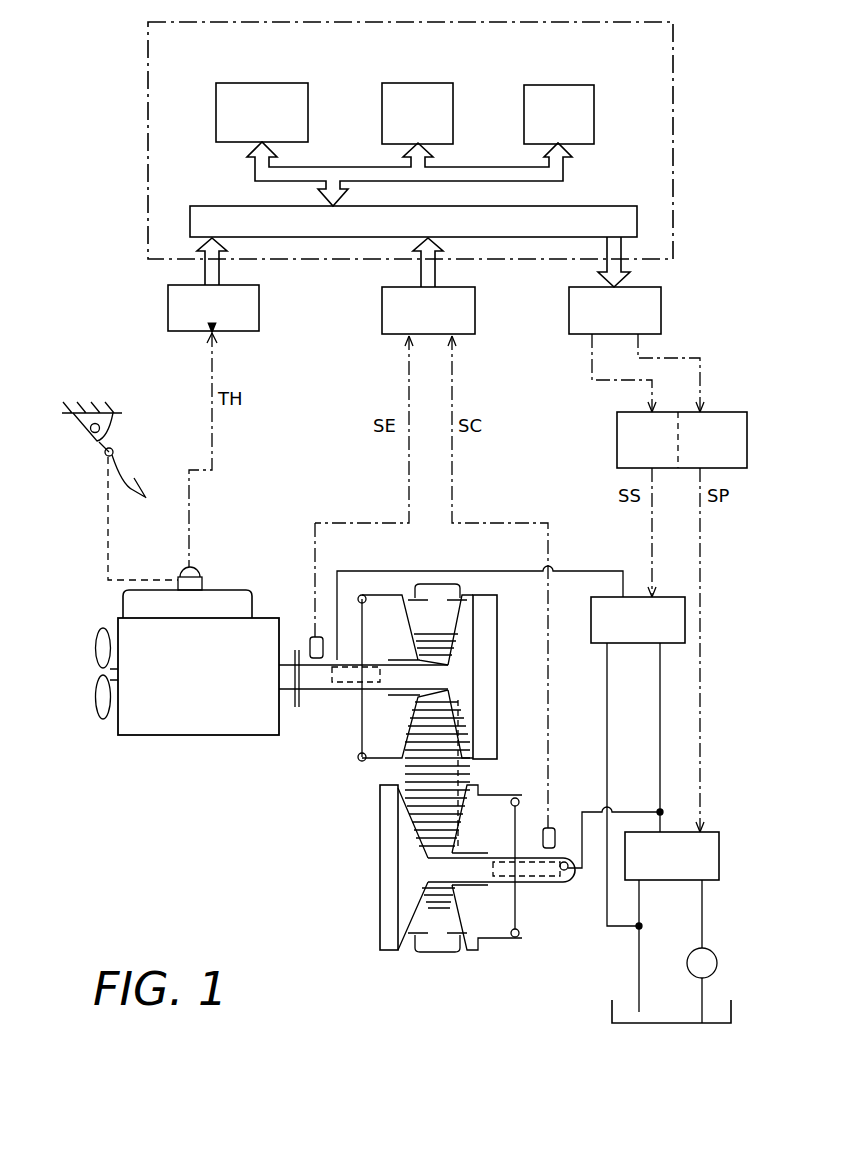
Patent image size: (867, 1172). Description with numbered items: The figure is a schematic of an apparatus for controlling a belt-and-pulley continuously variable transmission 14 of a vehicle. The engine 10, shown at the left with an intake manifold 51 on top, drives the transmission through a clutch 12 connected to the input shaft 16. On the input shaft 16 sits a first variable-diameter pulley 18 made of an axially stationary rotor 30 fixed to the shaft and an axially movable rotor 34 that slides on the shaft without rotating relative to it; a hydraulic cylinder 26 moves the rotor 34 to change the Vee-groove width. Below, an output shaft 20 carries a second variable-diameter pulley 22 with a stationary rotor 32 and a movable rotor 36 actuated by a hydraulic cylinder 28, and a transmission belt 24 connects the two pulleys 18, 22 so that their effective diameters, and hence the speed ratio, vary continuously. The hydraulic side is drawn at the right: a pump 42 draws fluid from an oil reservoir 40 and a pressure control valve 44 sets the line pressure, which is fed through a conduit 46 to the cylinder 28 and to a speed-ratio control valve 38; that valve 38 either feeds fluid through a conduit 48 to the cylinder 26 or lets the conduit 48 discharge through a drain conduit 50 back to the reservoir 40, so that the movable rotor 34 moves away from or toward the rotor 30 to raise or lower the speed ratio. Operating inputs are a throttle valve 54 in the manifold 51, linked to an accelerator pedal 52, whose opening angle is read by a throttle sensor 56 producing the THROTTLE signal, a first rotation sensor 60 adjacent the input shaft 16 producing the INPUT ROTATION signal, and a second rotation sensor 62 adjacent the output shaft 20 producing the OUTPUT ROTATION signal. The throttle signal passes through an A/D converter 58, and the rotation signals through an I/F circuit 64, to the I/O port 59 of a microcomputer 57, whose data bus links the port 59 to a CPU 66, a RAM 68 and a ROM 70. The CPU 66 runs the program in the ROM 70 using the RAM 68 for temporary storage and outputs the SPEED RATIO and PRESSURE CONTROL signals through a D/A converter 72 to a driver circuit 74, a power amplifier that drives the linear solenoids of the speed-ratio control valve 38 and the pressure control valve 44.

The engine 10 is at (153, 730).
The clutch 12 is at (297, 717).
The continuously variable transmission 14 is at (322, 857).
The input shaft 16 is at (440, 682).
The first variable-diameter pulley 18 is at (372, 782).
The output shaft 20 is at (433, 868).
The second variable-diameter pulley 22 is at (388, 957).
The transmission belt 24 is at (442, 957).
The hydraulic cylinder 26 is at (355, 730).
The hydraulic cylinder 28 is at (522, 897).
The axially stationary rotor 30 is at (488, 621).
The axially stationary rotor 32 is at (385, 937).
The axially movable rotor 34 is at (372, 758).
The axially movable rotor 36 is at (480, 952).
The speed-ratio control valve 38 is at (634, 608).
The oil reservoir 40 is at (612, 1016).
The pump 42 is at (707, 963).
The pressure control valve 44 is at (707, 870).
The conduit 46 is at (663, 823).
The conduit 48 is at (473, 570).
The drain conduit 50 is at (607, 713).
The intake manifold 51 is at (135, 605).
The accelerator pedal 52 is at (105, 446).
The throttle valve 54 is at (200, 585).
The throttle sensor 56 is at (195, 572).
The microcomputer 57 is at (636, 22).
The A/D converter 58 is at (168, 311).
The I/O port 59 is at (208, 211).
The first rotation sensor 60 is at (310, 637).
The second rotation sensor 62 is at (555, 833).
The I/F circuit 64 is at (463, 321).
The CPU 66 is at (292, 90).
The RAM 68 is at (445, 90).
The ROM 70 is at (580, 92).
The D/A converter 72 is at (652, 319).
The driver circuit 74 is at (623, 455).